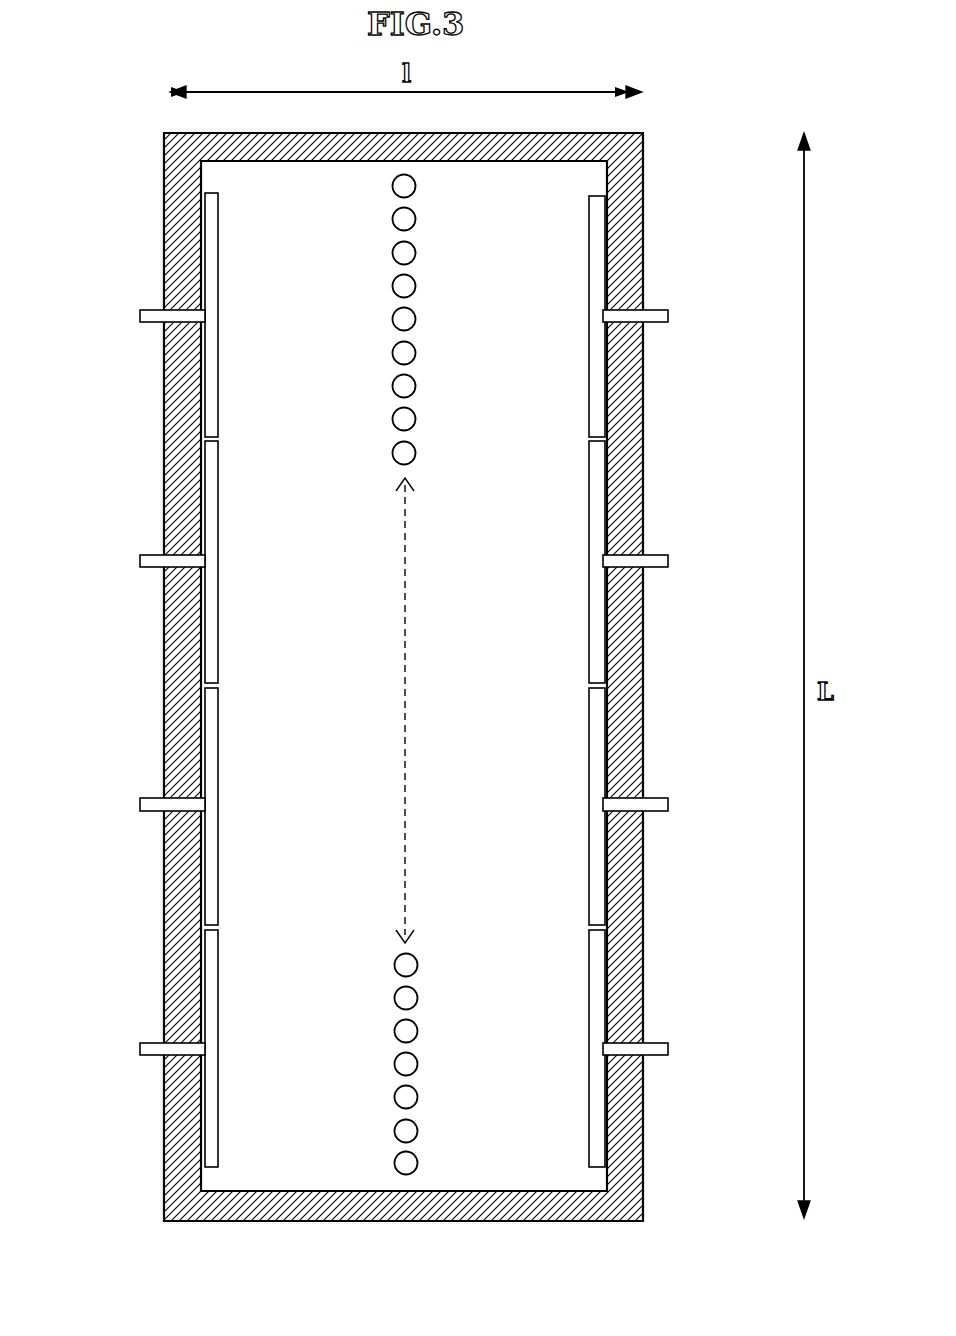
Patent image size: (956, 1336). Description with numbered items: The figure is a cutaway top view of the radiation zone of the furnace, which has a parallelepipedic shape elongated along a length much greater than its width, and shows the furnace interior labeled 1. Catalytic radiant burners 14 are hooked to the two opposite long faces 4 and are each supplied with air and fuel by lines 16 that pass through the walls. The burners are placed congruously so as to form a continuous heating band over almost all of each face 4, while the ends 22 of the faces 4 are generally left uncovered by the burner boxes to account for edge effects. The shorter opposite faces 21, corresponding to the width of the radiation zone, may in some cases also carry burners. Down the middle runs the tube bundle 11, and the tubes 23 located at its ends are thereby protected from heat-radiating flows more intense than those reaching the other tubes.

The reactor chamber 1 is at (340, 575).
The faces 4 is at (165, 484).
The tube bundle 11 is at (410, 290).
The catalytic radiant burners 14 is at (240, 363).
The lines 16 is at (157, 317).
The opposite faces 21 is at (248, 148).
The ends 22 is at (213, 176).
The tubes 23 is at (413, 192).